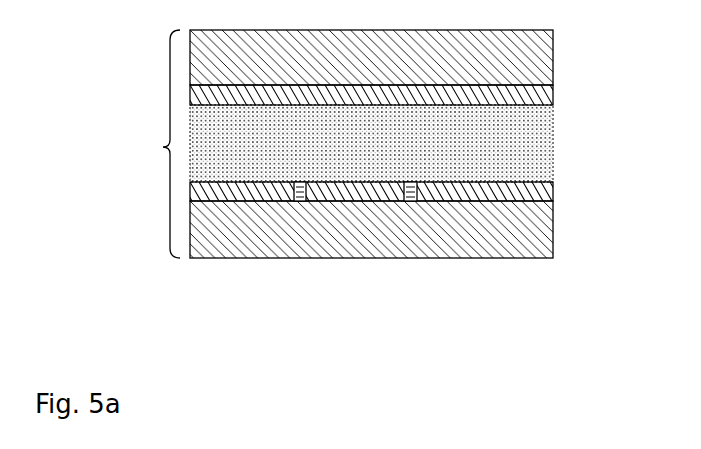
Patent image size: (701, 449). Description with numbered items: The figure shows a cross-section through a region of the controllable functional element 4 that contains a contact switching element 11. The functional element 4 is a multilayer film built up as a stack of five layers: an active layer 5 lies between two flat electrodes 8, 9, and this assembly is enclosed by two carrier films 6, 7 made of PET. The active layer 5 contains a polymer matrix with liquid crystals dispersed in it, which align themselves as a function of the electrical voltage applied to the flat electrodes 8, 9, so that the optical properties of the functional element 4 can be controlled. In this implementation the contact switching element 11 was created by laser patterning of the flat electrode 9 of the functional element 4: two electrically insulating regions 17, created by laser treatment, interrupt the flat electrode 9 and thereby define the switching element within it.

The controllable functional element 4 is at (160, 144).
The active layer 5 is at (553, 143).
The carrier film 6 is at (553, 60).
The carrier film 7 is at (553, 230).
The flat electrode 8 is at (553, 96).
The flat electrode 9 is at (553, 192).
The contact switching element 11 is at (259, 313).
The electrically insulating regions 17 is at (300, 201).